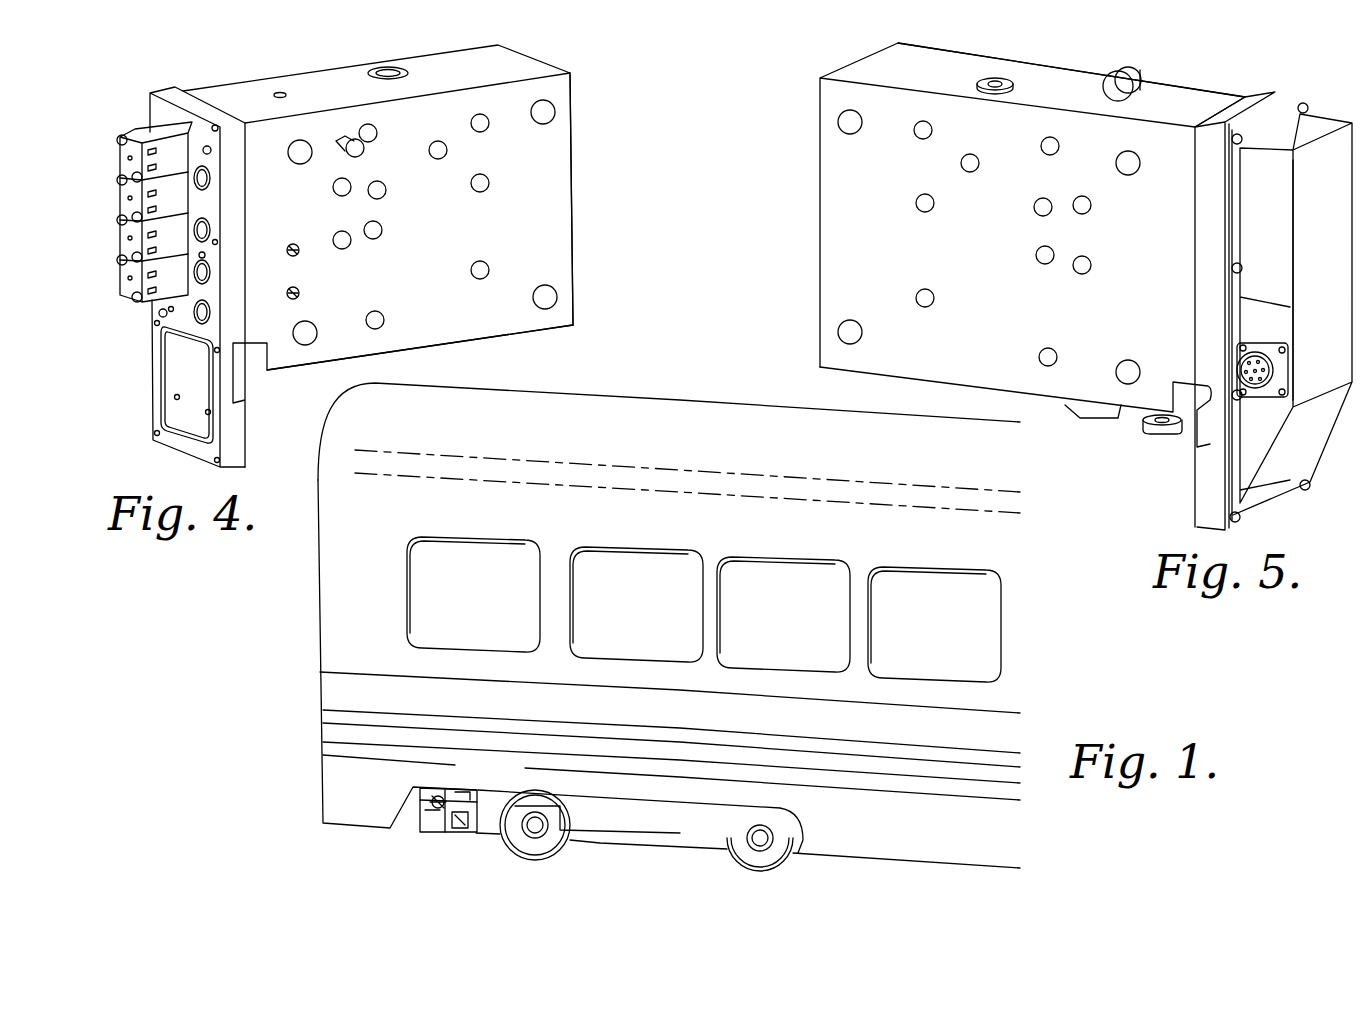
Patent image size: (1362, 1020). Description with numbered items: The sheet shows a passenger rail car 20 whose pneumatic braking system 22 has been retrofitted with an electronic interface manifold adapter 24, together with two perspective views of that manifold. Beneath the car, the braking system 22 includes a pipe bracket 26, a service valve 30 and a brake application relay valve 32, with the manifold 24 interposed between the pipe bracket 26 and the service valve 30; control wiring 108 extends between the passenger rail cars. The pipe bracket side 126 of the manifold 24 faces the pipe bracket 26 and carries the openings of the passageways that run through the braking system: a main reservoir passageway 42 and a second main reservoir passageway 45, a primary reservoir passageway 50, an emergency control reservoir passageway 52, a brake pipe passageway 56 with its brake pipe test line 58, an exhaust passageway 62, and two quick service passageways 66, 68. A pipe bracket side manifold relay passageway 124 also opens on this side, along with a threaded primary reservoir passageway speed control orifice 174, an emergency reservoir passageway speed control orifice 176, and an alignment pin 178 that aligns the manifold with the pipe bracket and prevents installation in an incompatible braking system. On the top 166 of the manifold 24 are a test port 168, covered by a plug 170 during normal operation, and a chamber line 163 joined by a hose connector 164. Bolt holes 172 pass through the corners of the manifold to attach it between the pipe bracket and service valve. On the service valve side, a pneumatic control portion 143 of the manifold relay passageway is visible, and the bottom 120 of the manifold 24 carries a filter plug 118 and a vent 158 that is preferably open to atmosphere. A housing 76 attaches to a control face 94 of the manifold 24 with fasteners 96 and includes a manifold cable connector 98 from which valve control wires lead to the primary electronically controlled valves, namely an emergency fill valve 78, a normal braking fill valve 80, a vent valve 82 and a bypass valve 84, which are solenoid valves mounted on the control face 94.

In FIG. 1, the passenger rail car 20 is at (676, 425).
In FIG. 1, the pneumatic braking system 22 is at (412, 836).
In FIG. 4, the electronic interface manifold adapter 24 is at (132, 110).
In FIG. 5, the electronic interface manifold adapter 24 is at (810, 88).
In FIG. 1, the pipe bracket 26 is at (440, 835).
In FIG. 1, the service valve 30 is at (415, 810).
In FIG. 1, the brake application relay valve 32 is at (462, 830).
In FIG. 4, the main reservoir passageway 42 is at (371, 135).
In FIG. 5, the main reservoir passageway 42 is at (1050, 140).
In FIG. 4, the second main reservoir passageway 45 is at (481, 120).
In FIG. 5, the second main reservoir passageway 45 is at (924, 122).
In FIG. 4, the primary reservoir passageway 50 is at (342, 248).
In FIG. 5, the primary reservoir passageway 50 is at (1088, 265).
In FIG. 4, the emergency control reservoir passageway 52 is at (480, 279).
In FIG. 5, the emergency control reservoir passageway 52 is at (920, 298).
In FIG. 4, the brake pipe passageway 56 is at (380, 316).
In FIG. 5, the brake pipe passageway 56 is at (1044, 357).
In FIG. 4, the brake pipe test line 58 is at (380, 190).
In FIG. 5, the brake pipe test line 58 is at (1040, 206).
In FIG. 4, the exhaust passageway 62 is at (376, 232).
In FIG. 5, the exhaust passageway 62 is at (1043, 256).
In FIG. 4, the quick service passageway 66 is at (482, 186).
In FIG. 5, the quick service passageway 66 is at (920, 206).
In FIG. 4, the quick service passageway 68 is at (341, 193).
In FIG. 5, the quick service passageway 68 is at (1085, 208).
In FIG. 5, the housing 76 is at (1312, 205).
In FIG. 4, the emergency fill valve 78 is at (122, 165).
In FIG. 4, the normal braking fill valve 80 is at (122, 206).
In FIG. 4, the vent valve 82 is at (122, 245).
In FIG. 4, the bypass valve 84 is at (122, 283).
In FIG. 4, the control face 94 is at (160, 110).
In FIG. 5, the control face 94 is at (1292, 95).
In FIG. 5, the fasteners 96 is at (1305, 106).
In FIG. 5, the manifold cable connector 98 is at (1280, 375).
In FIG. 1, the control wiring 108 is at (460, 793).
In FIG. 5, the filter plug 118 is at (1090, 410).
In FIG. 4, the bottom of the manifold 120 is at (505, 338).
In FIG. 5, the bottom of the manifold 120 is at (855, 370).
In FIG. 4, the pipe bracket side manifold relay passageway 124 is at (442, 152).
In FIG. 4, the pipe bracket side 126 is at (555, 140).
In FIG. 5, the pneumatic control portion 143 is at (962, 161).
In FIG. 5, the vent 158 is at (1165, 432).
In FIG. 4, the chamber line 163 is at (278, 92).
In FIG. 5, the hose connector 164 is at (1132, 80).
In FIG. 5, the top of the manifold 166 is at (875, 72).
In FIG. 4, the test port 168 is at (384, 70).
In FIG. 5, the plug 170 is at (996, 82).
In FIG. 4, the bolt holes 172 is at (545, 110).
In FIG. 5, the bolt holes 172 is at (848, 118).
In FIG. 4, the primary reservoir passageway speed control orifice 174 is at (296, 257).
In FIG. 4, the emergency reservoir passageway speed control orifice 176 is at (298, 296).
In FIG. 4, the alignment pin 178 is at (352, 142).